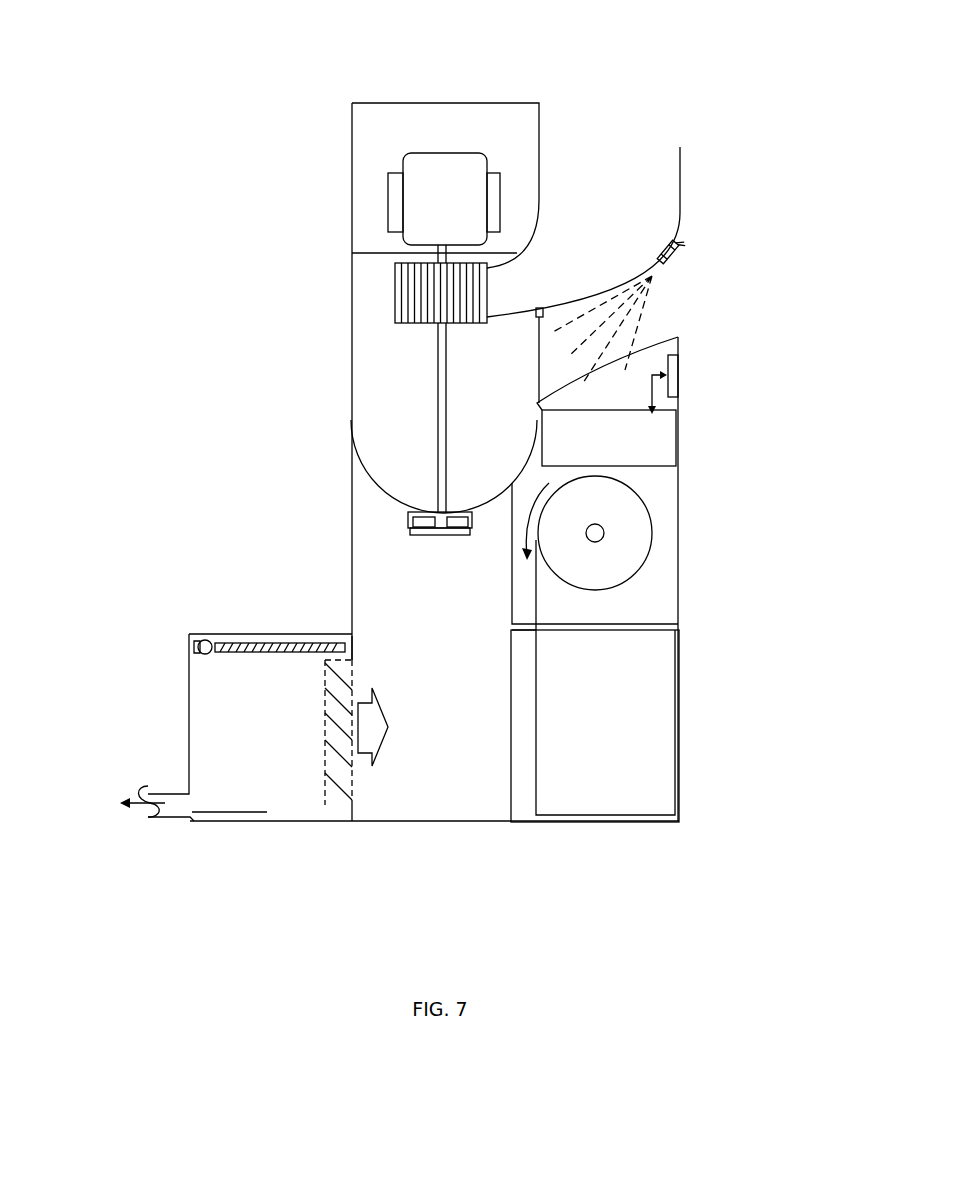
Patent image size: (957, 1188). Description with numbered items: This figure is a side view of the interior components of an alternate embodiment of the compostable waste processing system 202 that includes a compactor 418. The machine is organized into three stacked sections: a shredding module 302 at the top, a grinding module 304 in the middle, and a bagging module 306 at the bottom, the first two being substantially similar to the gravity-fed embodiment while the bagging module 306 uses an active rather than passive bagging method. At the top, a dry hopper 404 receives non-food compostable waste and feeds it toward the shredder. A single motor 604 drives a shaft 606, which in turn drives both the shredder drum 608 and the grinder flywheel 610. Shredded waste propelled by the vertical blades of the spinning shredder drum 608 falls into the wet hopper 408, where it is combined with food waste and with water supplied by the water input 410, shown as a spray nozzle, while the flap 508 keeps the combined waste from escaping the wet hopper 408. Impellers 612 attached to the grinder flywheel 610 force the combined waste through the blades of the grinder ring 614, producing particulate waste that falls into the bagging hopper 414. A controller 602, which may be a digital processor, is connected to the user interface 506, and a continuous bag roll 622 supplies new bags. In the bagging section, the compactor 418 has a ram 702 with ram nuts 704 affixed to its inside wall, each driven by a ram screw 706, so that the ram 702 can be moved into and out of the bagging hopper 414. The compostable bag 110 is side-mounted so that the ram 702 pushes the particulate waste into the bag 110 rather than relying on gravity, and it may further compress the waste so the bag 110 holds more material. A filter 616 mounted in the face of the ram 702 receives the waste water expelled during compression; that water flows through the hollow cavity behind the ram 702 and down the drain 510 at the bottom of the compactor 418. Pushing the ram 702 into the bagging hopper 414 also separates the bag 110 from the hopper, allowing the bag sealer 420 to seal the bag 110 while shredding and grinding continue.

The compostable waste processing system 202 is at (284, 81).
The shredding module 302 is at (790, 103).
The grinding module 304 is at (790, 327).
The bagging module 306 is at (790, 555).
The dry hopper 404 is at (590, 223).
The wet hopper 408 is at (480, 444).
The water input 410 is at (675, 270).
The bagging hopper 414 is at (417, 646).
The compactor 418 is at (182, 580).
The bag sealer 420 is at (525, 805).
The user interface 506 is at (678, 370).
The flap 508 is at (537, 350).
The drain 510 is at (123, 793).
The controller 602 is at (590, 444).
The motor 604 is at (423, 213).
The shaft 606 is at (437, 370).
The shredder drum 608 is at (393, 295).
The grinder flywheel 610 is at (452, 537).
The impellers 612 is at (432, 530).
The grinder ring 614 is at (462, 535).
The filter 616 is at (330, 703).
The continuous bag roll 622 is at (653, 537).
The ram 702 is at (267, 812).
The ram nuts 704 is at (202, 638).
The ram screw 706 is at (315, 645).
The compostable bag 110 is at (590, 730).